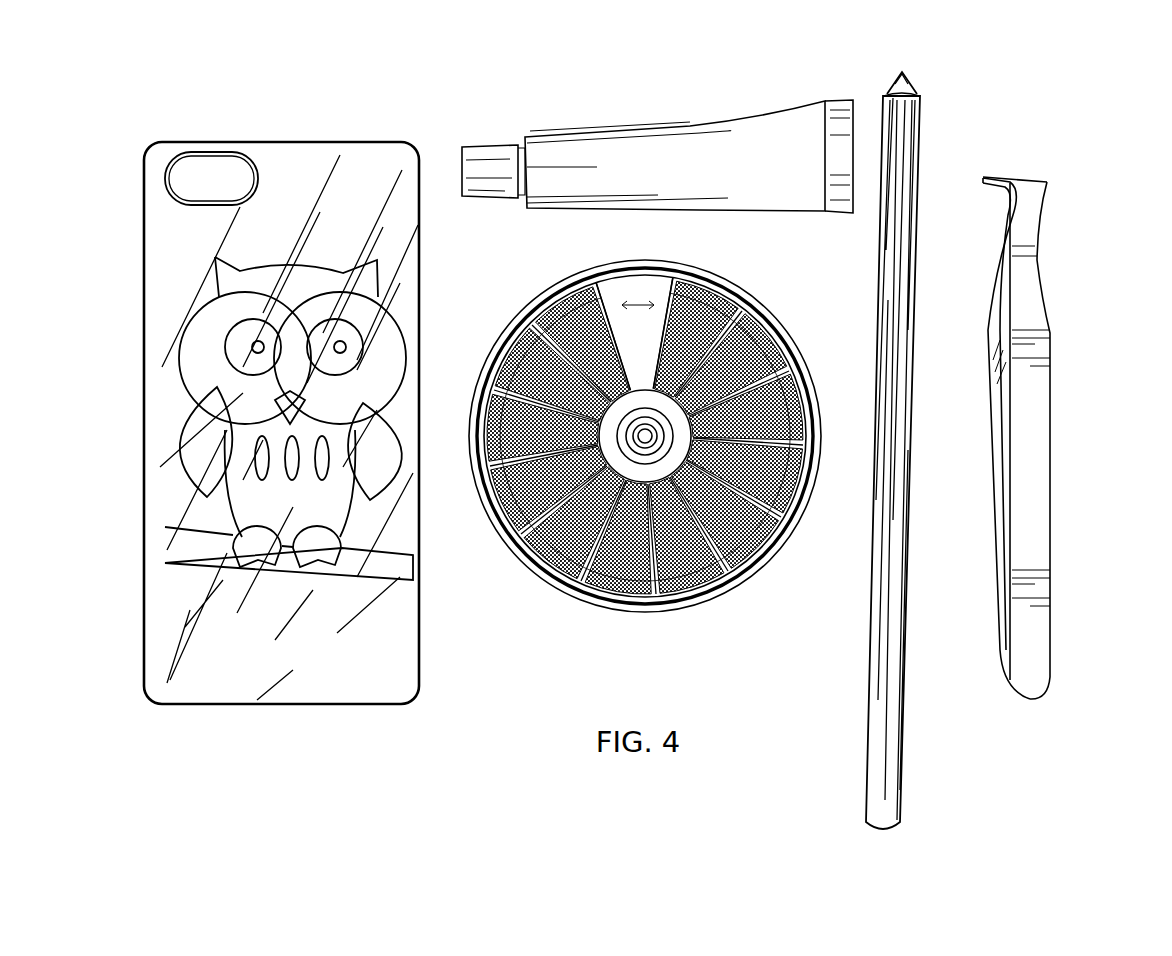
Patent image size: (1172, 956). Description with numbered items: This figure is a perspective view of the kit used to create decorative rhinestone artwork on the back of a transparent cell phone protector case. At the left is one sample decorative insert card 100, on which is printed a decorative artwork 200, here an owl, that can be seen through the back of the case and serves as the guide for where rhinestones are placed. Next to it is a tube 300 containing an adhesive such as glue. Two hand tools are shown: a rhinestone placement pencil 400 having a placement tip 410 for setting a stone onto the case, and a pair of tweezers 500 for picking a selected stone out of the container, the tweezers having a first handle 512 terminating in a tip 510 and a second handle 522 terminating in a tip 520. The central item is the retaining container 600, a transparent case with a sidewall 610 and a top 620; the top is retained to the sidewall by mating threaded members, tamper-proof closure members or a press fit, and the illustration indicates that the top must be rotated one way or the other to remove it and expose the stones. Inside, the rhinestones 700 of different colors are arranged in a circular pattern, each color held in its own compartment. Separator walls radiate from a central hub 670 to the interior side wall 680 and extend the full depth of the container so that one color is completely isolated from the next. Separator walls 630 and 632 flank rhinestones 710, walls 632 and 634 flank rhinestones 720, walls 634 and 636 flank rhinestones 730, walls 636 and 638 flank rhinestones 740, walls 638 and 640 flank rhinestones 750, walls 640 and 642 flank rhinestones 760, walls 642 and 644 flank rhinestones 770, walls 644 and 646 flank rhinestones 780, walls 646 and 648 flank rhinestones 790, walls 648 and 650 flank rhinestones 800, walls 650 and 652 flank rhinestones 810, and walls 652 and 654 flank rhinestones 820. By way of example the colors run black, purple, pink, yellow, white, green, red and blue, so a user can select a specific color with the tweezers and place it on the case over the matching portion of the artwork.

The decorative insert card 100 is at (382, 126).
The decorative artwork 200 is at (235, 512).
The tube 300 is at (655, 148).
The rhinestone placement pencil 400 is at (919, 432).
The placement tip 410 is at (902, 72).
The pair of tweezers 500 is at (1025, 415).
The tip 510 is at (988, 188).
The first handle 512 is at (992, 461).
The tip 520 is at (996, 178).
The second handle 522 is at (1040, 475).
The retaining container 600 is at (648, 464).
The sidewall 610 is at (747, 293).
The top 620 is at (636, 282).
The separator wall 630 is at (590, 276).
The separator wall 632 is at (537, 332).
The separator wall 634 is at (490, 390).
The separator wall 636 is at (485, 475).
The separator wall 638 is at (520, 540).
The separator wall 640 is at (577, 597).
The separator wall 642 is at (657, 600).
The separator wall 644 is at (737, 585).
The separator wall 646 is at (783, 532).
The separator wall 648 is at (810, 445).
The separator wall 650 is at (793, 372).
The separator wall 652 is at (752, 304).
The separator wall 654 is at (671, 288).
The central hub 670 is at (630, 467).
The interior side wall 680 is at (605, 282).
The rhinestones 700 is at (668, 577).
The rhinestones 710 is at (555, 305).
The rhinestones 720 is at (508, 355).
The rhinestones 730 is at (470, 435).
The rhinestones 740 is at (532, 497).
The rhinestones 750 is at (548, 570).
The rhinestones 760 is at (597, 598).
The rhinestones 770 is at (708, 598).
The rhinestones 780 is at (773, 548).
The rhinestones 790 is at (807, 475).
The rhinestones 800 is at (805, 395).
The rhinestones 810 is at (767, 327).
The rhinestones 820 is at (698, 283).